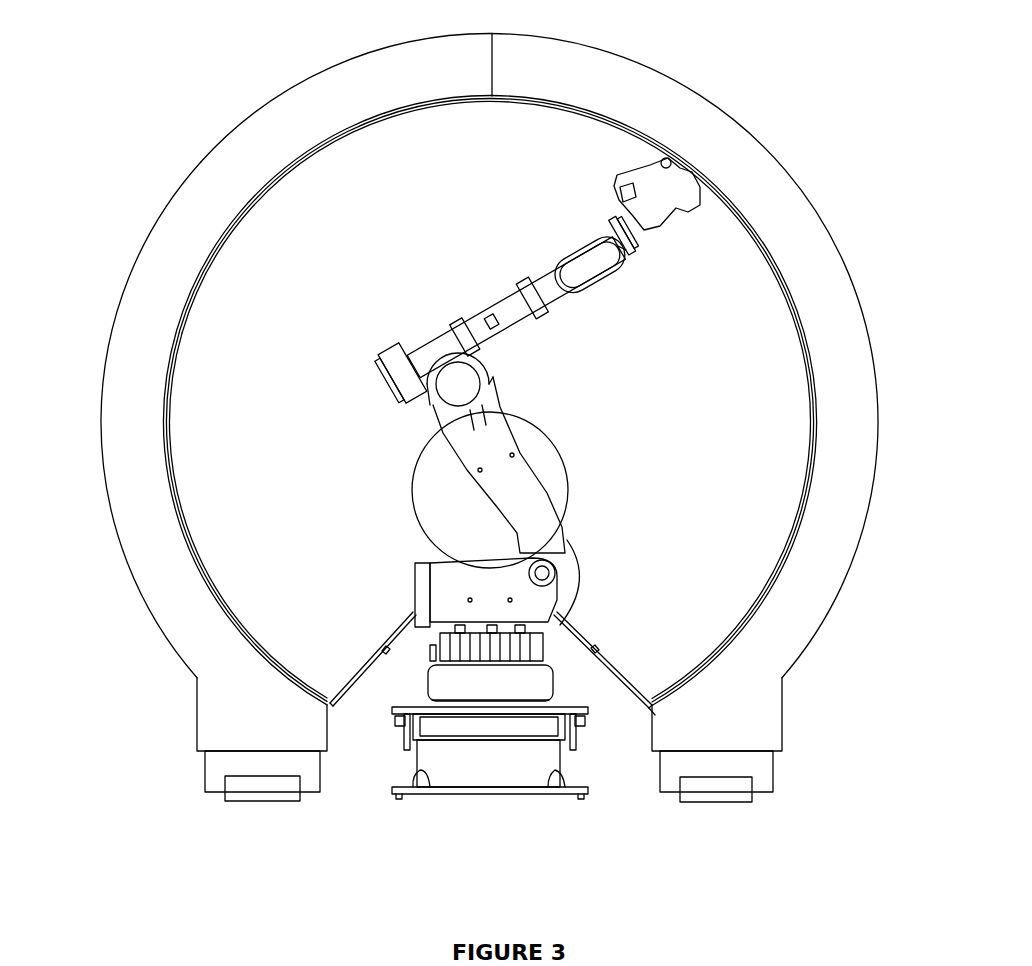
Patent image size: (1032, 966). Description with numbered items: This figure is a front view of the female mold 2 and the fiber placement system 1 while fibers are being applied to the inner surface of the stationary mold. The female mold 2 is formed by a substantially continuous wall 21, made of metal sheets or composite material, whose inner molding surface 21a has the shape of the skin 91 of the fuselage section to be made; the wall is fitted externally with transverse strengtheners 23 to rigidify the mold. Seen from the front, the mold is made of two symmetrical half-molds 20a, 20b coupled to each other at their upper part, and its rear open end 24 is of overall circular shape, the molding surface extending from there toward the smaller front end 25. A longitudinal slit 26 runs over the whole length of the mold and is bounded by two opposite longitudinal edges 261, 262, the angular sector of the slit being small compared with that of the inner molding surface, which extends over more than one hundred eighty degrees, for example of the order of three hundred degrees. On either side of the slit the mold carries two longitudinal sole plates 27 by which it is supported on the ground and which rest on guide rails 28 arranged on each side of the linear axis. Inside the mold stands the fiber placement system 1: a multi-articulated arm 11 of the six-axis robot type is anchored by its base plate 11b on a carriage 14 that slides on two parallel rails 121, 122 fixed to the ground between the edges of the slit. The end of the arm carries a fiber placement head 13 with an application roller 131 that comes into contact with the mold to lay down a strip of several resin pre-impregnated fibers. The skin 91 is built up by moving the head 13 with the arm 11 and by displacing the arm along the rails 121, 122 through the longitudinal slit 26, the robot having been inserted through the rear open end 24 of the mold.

The fiber placement system 1 is at (493, 796).
The female mold 2 is at (283, 90).
The multi-articulated arm 11 is at (497, 305).
The base plate 11b is at (560, 680).
The fiber placement head 13 is at (610, 195).
The application roller 131 is at (655, 160).
The carriage 14 is at (393, 717).
The half-mold 20a is at (372, 74).
The half-mold 20b is at (625, 64).
The wall 21 is at (172, 330).
The inner molding surface 21a is at (183, 540).
The transverse strengtheners 23 is at (213, 173).
The rear open end 24 is at (650, 706).
The front end 25 is at (568, 463).
The longitudinal slit 26 is at (370, 658).
The longitudinal edge 261 is at (400, 628).
The longitudinal edge 262 is at (585, 628).
The longitudinal sole plates 27 is at (760, 777).
The guide rails 28 is at (248, 790).
The skin 91 is at (275, 188).
The rail 121 is at (420, 772).
The rail 122 is at (553, 772).